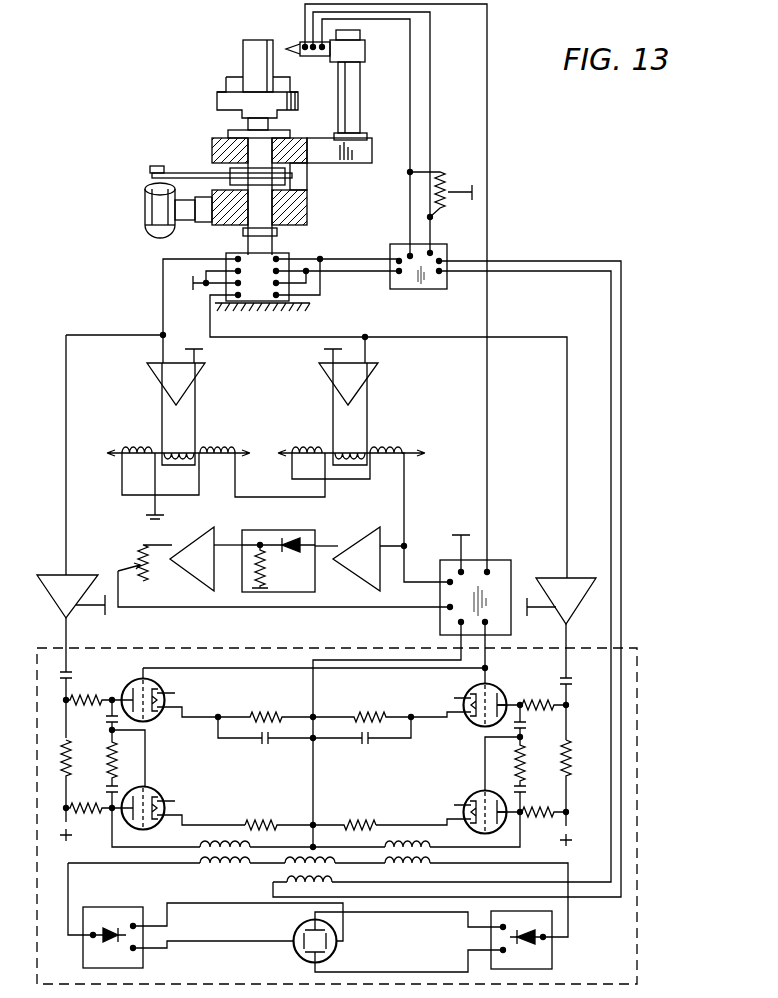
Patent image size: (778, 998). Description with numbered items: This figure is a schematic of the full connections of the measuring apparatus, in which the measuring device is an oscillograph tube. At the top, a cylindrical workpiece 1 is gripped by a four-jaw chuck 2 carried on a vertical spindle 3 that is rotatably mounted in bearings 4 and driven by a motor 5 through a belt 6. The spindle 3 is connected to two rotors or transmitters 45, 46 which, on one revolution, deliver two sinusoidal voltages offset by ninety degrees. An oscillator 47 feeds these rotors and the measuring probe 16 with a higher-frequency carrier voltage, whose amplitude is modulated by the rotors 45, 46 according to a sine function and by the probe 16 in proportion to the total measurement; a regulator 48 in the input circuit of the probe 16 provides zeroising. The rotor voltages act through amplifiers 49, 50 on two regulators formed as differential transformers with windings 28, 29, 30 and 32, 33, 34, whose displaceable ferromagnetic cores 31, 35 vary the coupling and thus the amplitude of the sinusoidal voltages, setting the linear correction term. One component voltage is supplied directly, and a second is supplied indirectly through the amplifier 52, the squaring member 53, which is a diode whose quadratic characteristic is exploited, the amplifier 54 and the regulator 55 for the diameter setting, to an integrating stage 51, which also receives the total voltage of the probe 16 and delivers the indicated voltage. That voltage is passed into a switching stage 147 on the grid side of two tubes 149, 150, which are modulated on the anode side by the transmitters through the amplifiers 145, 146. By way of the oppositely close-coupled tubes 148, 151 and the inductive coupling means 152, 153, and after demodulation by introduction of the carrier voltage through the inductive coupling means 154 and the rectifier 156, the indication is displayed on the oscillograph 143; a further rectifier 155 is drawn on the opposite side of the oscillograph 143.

The cylindrical workpiece 1 is at (243, 50).
The four-jaw chuck 2 is at (222, 100).
The vertical spindle 3 is at (250, 124).
The bearings 4 is at (303, 168).
The motor 5 is at (145, 207).
The belt 6 is at (192, 178).
The measuring probe 16 is at (318, 56).
The transformer winding 28 is at (358, 447).
The transformer winding 29 is at (400, 444).
The transformer winding 30 is at (322, 444).
The displaceable ferromagnetic core 31 is at (366, 455).
The transformer winding 32 is at (186, 447).
The transformer winding 33 is at (232, 444).
The transformer winding 34 is at (152, 444).
The displaceable ferromagnetic core 35 is at (163, 455).
The rotor 45 is at (263, 263).
The rotor 46 is at (262, 293).
The oscillator 47 is at (416, 287).
The regulator 48 is at (447, 184).
The amplifier 49 is at (162, 376).
The amplifier 50 is at (334, 376).
The integrating stage 51 is at (447, 562).
The amplifier 52 is at (367, 541).
The squaring member 53 is at (271, 532).
The amplifier 54 is at (206, 541).
The regulator 55 is at (140, 562).
The oscillograph 143 is at (294, 951).
The amplifier 145 is at (59, 575).
The amplifier 146 is at (548, 578).
The switching stage 147 is at (55, 733).
The tube 148 is at (152, 794).
The tube 149 is at (152, 717).
The tube 150 is at (499, 691).
The tube 151 is at (478, 793).
The inductive coupling means 152 is at (205, 862).
The inductive coupling means 153 is at (418, 856).
The inductive coupling means 154 is at (290, 870).
The rectifier 155 is at (113, 907).
The rectifier 156 is at (549, 962).